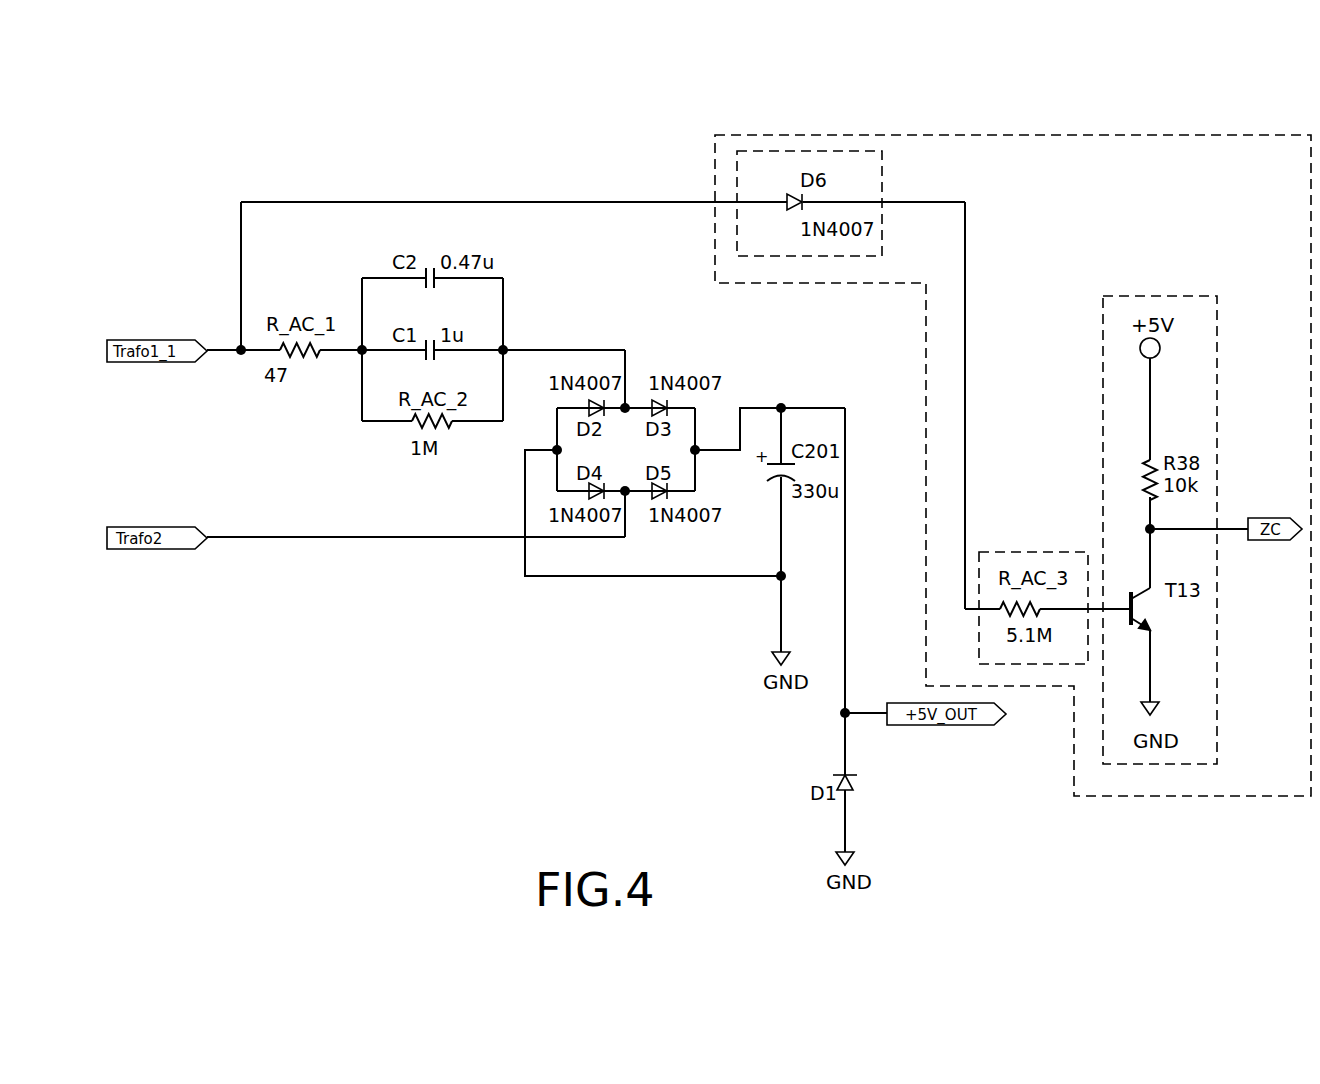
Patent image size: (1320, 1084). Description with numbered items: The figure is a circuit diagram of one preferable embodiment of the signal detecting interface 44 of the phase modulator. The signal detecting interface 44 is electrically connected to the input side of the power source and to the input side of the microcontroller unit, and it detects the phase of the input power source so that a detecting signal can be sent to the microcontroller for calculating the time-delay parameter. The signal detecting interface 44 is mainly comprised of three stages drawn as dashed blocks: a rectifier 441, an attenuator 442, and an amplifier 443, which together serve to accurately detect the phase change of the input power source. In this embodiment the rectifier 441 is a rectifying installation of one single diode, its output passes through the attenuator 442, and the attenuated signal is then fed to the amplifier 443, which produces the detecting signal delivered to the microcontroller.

The signal detecting interface 44 is at (1262, 778).
The rectifier 441 is at (755, 172).
The attenuator 442 is at (1053, 667).
The amplifier 443 is at (1193, 750).